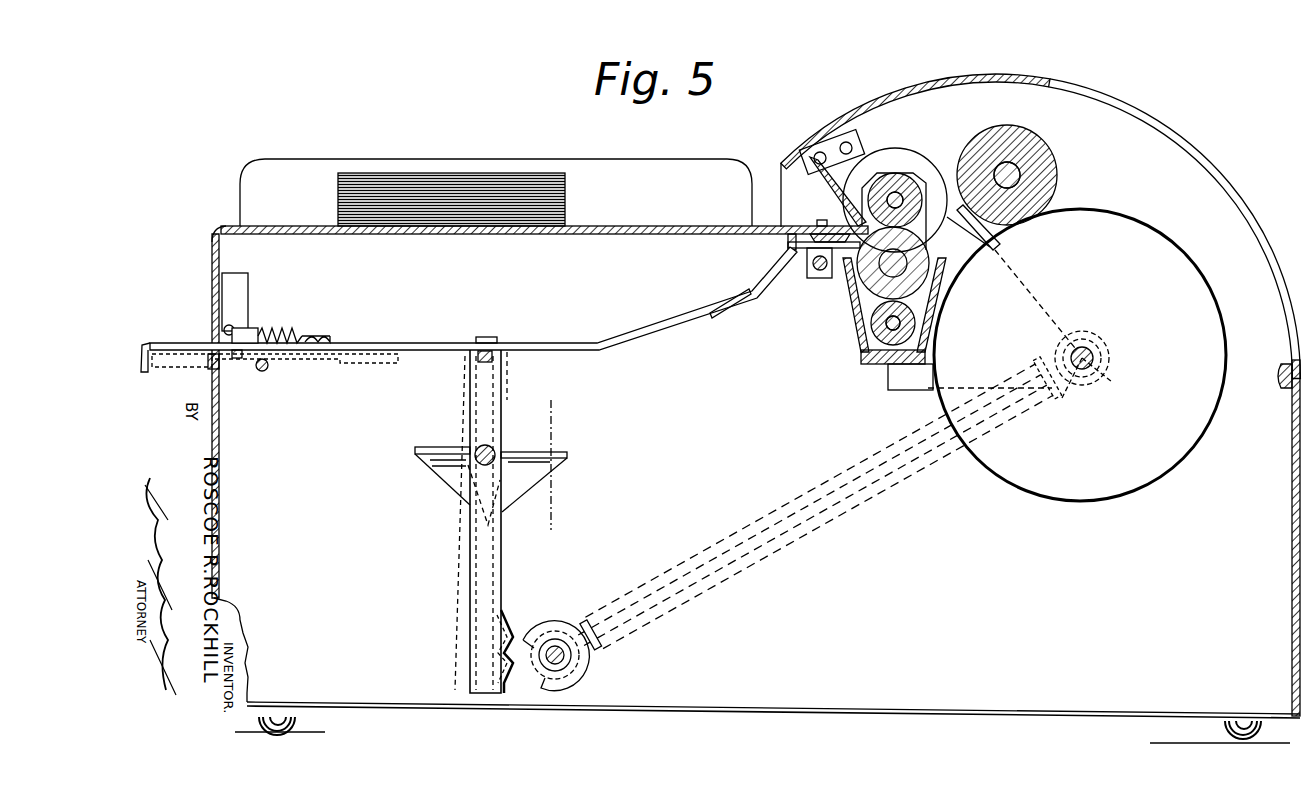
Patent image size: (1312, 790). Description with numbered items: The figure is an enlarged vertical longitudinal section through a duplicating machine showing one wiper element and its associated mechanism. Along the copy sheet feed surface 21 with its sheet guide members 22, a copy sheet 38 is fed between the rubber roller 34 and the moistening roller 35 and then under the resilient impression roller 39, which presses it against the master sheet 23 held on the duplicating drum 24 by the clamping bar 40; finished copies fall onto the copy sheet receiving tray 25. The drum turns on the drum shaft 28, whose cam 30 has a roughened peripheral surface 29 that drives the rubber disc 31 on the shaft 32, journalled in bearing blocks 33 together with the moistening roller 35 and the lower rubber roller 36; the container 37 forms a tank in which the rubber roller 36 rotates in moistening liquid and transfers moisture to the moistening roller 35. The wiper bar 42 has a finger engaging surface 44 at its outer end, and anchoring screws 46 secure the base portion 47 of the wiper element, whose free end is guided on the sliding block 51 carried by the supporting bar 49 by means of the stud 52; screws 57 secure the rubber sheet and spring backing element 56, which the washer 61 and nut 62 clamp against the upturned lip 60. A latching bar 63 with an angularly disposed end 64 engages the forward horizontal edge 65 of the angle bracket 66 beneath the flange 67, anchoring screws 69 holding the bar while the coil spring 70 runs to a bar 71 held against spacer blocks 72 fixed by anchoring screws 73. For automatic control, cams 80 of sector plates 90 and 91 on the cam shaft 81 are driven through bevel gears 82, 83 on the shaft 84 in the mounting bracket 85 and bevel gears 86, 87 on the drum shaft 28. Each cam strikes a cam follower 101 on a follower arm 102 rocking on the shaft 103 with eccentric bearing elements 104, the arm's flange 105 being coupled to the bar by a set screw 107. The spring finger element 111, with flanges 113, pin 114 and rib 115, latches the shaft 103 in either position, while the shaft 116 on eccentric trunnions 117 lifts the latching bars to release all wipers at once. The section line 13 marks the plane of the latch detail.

The section line 13 is at (580, 418).
The copy sheet feed surface 21 is at (582, 226).
The sheet guide members 22 is at (628, 168).
The master sheet 23 is at (931, 400).
The duplicating drum 24 is at (1168, 262).
The copy sheet receiving tray 25 is at (1286, 366).
The drum shaft 28 is at (1090, 350).
The roughened peripheral surface 29 is at (886, 384).
The cam 30 is at (926, 381).
The rubber disc 31 is at (905, 160).
The shaft 32 is at (936, 228).
The bearing blocks 33 is at (920, 180).
The rubber roller 34 is at (895, 184).
The moistening roller 35 is at (870, 294).
The rubber roller 36 is at (916, 338).
The container 37 is at (862, 364).
The copy sheet 38 is at (483, 174).
The impression roller 39 is at (1056, 154).
The clamping bar 40 is at (987, 258).
The bar 42 is at (401, 343).
The finger engaging surface 44 is at (141, 373).
The anchoring screws 46 is at (737, 292).
The base portion 47 is at (756, 296).
The supporting bar 49 is at (820, 272).
The sliding block 51 is at (812, 259).
The stud 52 is at (823, 232).
The spring backing element 56 is at (790, 236).
The screws 57 is at (778, 249).
The lip 60 is at (832, 218).
The washer 61 is at (812, 236).
The nut 62 is at (840, 236).
The bar 63 is at (302, 363).
The angularly disposed end 64 is at (206, 358).
The forward horizontal edge 65 is at (240, 360).
The angle bracket 66 is at (212, 368).
The flange 67 is at (220, 322).
The anchoring screws 69 is at (318, 334).
The coil spring 70 is at (286, 332).
The bar 71 is at (229, 325).
The spacer blocks 72 is at (256, 330).
The anchoring screws 73 is at (242, 328).
The cams 80 is at (552, 694).
The cam shaft 81 is at (570, 663).
The bevel gear 82 is at (572, 632).
The bevel gear 83 is at (566, 656).
The shaft 84 is at (808, 538).
The mounting bracket 85 is at (810, 508).
The bevel gear 86 is at (1077, 395).
The bevel gear 87 is at (1111, 377).
The plate 90 is at (572, 680).
The plate 91 is at (542, 624).
The cam follower 101 is at (514, 632).
The follower arm 102 is at (498, 545).
The shaft 103 is at (478, 452).
The eccentric bearing elements 104 is at (485, 445).
The flange 105 is at (506, 362).
The set screw 107 is at (490, 337).
The spring finger element 111 is at (448, 478).
The flange 113 is at (423, 447).
The pin 114 is at (526, 452).
The rib 115 is at (434, 466).
The shaft 116 is at (264, 372).
The eccentric trunnions 117 is at (271, 372).